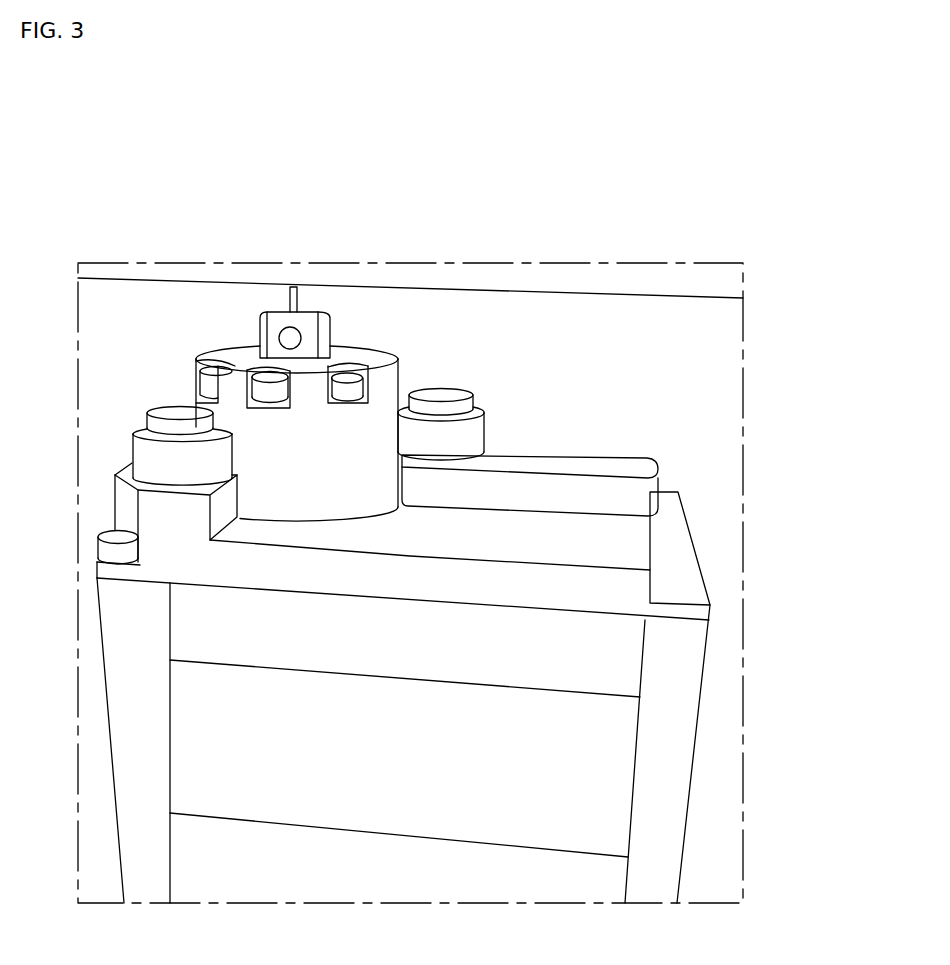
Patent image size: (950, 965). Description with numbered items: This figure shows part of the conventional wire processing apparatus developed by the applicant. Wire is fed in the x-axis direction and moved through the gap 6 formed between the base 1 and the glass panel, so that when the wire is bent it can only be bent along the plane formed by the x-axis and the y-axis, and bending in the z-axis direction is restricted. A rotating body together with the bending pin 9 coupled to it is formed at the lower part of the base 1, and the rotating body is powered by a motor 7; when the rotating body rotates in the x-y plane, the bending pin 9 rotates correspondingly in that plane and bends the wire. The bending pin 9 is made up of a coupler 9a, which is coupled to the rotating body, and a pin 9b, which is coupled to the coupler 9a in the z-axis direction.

The base 1 is at (663, 278).
The gap 6 is at (337, 442).
The motor 7 is at (582, 655).
The bending pin 9 is at (225, 183).
The coupler 9a is at (275, 327).
The pin 9b is at (290, 308).